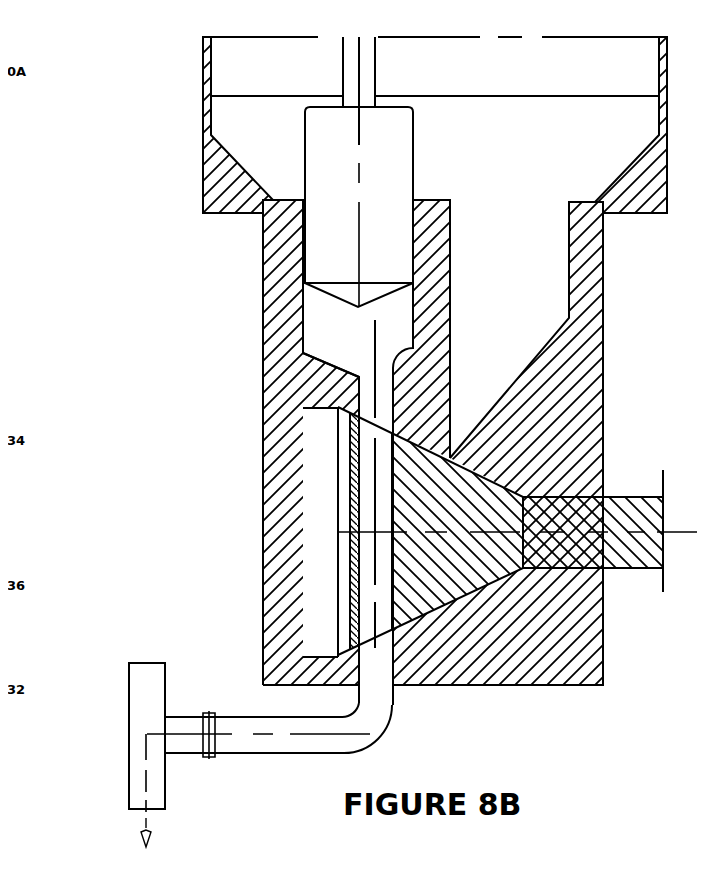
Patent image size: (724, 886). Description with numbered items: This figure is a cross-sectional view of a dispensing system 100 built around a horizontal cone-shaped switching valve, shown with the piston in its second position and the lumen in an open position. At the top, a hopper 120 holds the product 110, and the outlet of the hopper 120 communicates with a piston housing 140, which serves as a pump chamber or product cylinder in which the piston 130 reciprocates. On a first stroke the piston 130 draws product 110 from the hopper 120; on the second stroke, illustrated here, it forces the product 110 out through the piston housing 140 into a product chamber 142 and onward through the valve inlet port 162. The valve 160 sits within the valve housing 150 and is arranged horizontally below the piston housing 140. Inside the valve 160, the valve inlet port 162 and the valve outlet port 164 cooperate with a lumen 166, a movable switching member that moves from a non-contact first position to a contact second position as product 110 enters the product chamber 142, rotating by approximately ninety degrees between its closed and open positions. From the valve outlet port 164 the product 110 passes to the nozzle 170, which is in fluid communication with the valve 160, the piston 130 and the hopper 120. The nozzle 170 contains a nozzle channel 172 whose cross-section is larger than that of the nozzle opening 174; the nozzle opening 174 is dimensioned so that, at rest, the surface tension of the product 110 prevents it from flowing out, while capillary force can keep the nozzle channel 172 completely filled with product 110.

The dispensing system 100 is at (638, 76).
The product 110 is at (228, 117).
The hopper 120 is at (245, 185).
The piston 130 is at (330, 258).
The piston housing 140 is at (283, 332).
The product chamber 142 is at (347, 342).
The valve housing 150 is at (552, 650).
The valve 160 is at (350, 578).
The valve inlet port 162 is at (375, 390).
The valve outlet port 164 is at (278, 738).
The lumen 166 is at (367, 615).
The nozzle 170 is at (155, 680).
The nozzle channel 172 is at (140, 777).
The nozzle opening 174 is at (142, 821).